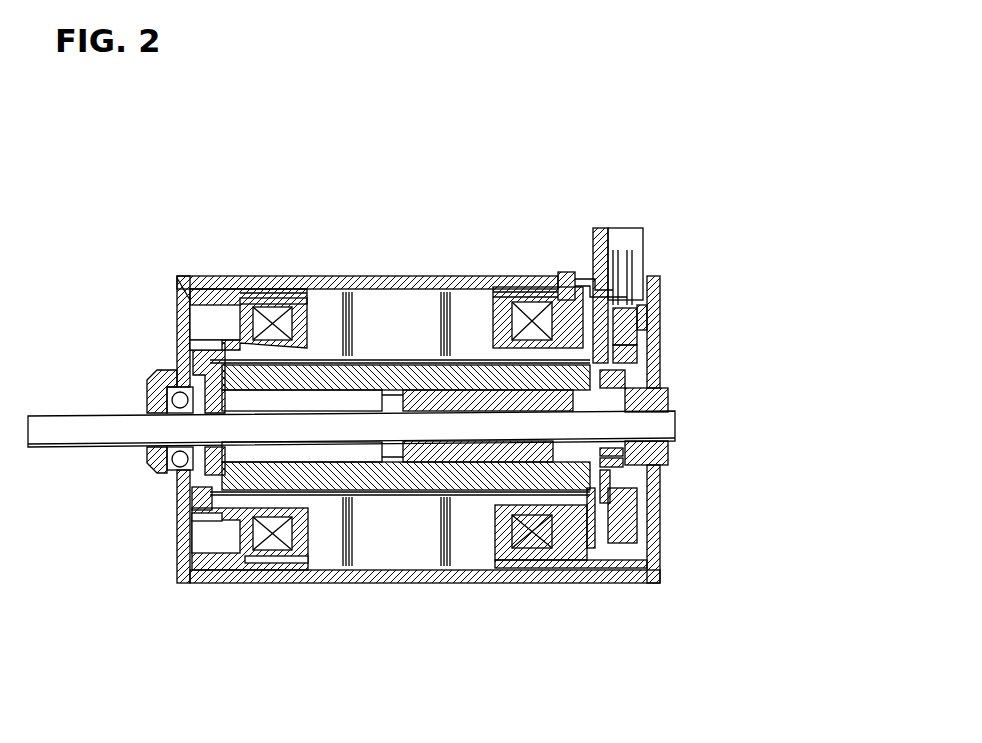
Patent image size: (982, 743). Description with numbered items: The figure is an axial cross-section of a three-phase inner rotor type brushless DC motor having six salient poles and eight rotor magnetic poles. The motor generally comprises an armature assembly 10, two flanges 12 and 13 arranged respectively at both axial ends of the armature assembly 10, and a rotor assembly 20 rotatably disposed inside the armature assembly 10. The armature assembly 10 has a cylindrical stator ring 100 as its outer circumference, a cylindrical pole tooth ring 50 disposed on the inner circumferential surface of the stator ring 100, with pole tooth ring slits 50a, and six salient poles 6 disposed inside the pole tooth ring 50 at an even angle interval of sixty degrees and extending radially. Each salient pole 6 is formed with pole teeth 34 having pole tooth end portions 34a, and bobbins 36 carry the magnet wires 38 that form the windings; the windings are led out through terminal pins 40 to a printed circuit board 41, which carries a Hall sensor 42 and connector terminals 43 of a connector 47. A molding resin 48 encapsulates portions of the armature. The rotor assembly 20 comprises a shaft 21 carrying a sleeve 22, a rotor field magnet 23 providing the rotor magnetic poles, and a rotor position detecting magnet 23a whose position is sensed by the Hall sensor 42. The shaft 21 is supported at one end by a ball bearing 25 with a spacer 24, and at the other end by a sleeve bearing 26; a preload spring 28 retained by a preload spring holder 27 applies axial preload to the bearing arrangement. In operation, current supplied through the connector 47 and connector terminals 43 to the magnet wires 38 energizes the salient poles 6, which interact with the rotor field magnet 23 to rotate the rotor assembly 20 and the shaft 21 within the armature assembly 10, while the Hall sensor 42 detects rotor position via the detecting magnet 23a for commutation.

The armature assembly 10 is at (344, 250).
The salient poles 6 is at (422, 335).
The flange 12 is at (178, 302).
The flange 13 is at (662, 305).
The rotor assembly 20 is at (458, 492).
The shaft 21 is at (85, 432).
The sleeve 22 is at (428, 455).
The rotor field magnet 23 is at (394, 484).
The rotor position detecting magnet 23a is at (628, 550).
The spacer 24 is at (192, 516).
The ball bearing 25 is at (175, 474).
The sleeve bearing 26 is at (655, 400).
The preload spring holder 27 is at (612, 463).
The preload spring 28 is at (632, 446).
The pole teeth 34 is at (455, 313).
The pole tooth end portions 34a is at (394, 290).
The bobbins 36 is at (507, 297).
The magnet wires 38 is at (549, 300).
The terminal pins 40 is at (594, 568).
The printed circuit board 41 is at (600, 240).
The Hall sensor 42 is at (640, 352).
The connector terminals 43 is at (630, 259).
The connector 47 is at (632, 238).
The molding resin 48 is at (209, 340).
The cylindrical pole tooth ring 50 is at (508, 576).
The pole tooth ring slits 50a is at (258, 294).
The cylindrical stator ring 100 is at (208, 584).